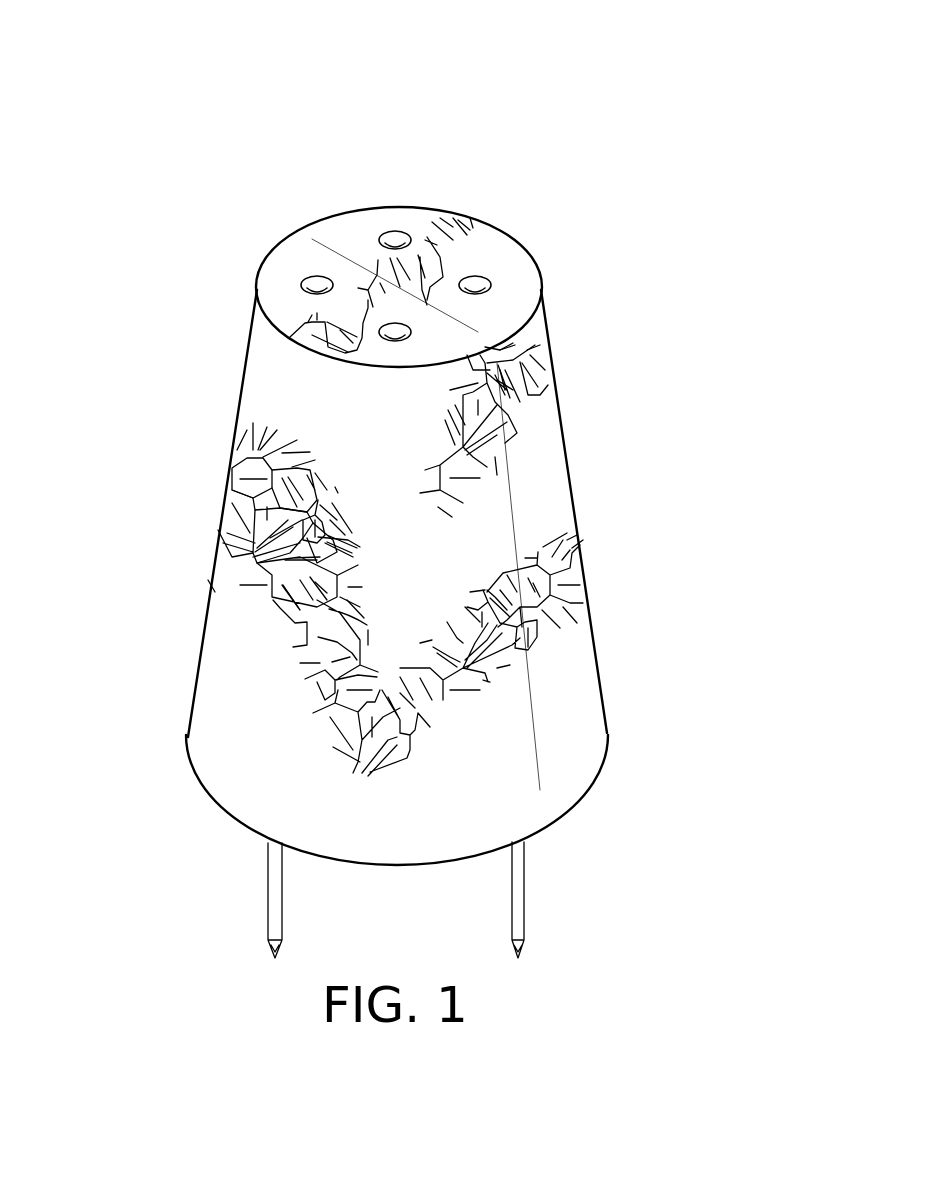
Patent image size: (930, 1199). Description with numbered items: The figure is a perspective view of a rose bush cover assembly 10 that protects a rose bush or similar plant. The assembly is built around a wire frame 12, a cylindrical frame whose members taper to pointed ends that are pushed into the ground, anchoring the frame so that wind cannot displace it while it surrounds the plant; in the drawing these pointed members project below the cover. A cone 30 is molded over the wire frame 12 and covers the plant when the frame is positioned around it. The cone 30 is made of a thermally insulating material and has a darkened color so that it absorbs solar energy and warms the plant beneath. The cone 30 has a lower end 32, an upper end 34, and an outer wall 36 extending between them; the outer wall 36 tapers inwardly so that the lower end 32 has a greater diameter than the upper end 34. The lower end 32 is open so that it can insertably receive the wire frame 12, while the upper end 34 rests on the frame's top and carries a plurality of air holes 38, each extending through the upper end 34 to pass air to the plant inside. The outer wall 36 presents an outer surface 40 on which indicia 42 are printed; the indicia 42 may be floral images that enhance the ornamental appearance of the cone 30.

The rose bush cover assembly 10 is at (599, 170).
The wire frame 12 is at (539, 910).
The cone 30 is at (201, 508).
The lower end 32 is at (237, 827).
The upper end 34 is at (278, 268).
The outer wall 36 is at (538, 447).
The air holes 38 is at (318, 276).
The outer surface 40 is at (232, 700).
The indicia 42 is at (405, 781).